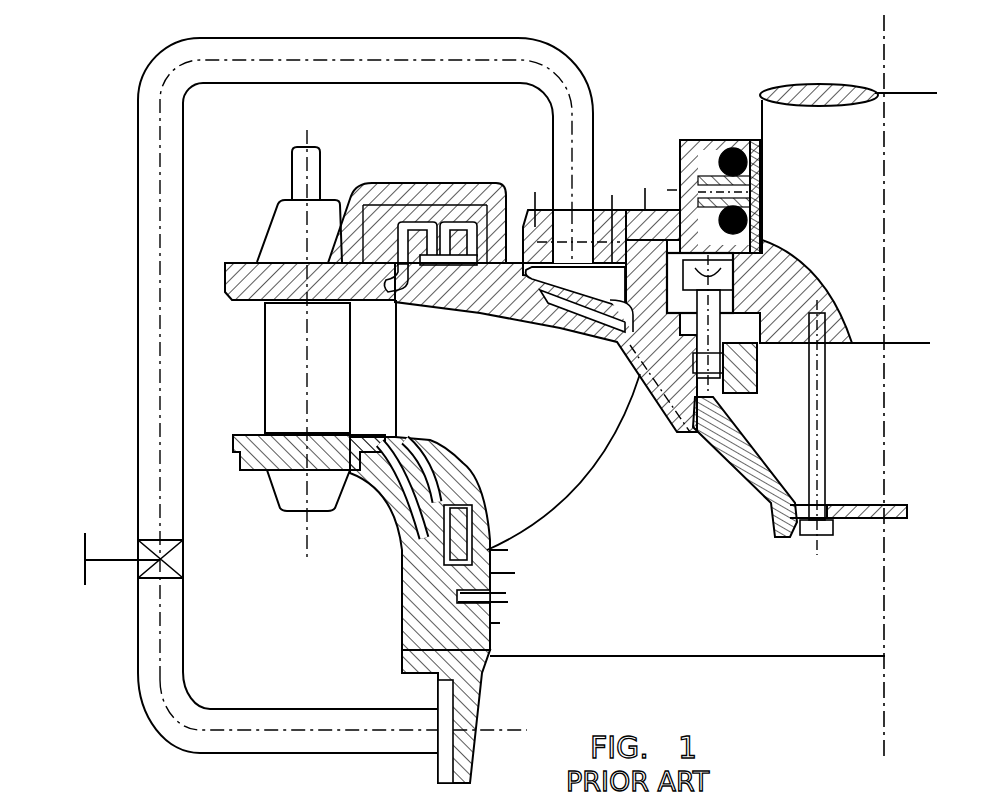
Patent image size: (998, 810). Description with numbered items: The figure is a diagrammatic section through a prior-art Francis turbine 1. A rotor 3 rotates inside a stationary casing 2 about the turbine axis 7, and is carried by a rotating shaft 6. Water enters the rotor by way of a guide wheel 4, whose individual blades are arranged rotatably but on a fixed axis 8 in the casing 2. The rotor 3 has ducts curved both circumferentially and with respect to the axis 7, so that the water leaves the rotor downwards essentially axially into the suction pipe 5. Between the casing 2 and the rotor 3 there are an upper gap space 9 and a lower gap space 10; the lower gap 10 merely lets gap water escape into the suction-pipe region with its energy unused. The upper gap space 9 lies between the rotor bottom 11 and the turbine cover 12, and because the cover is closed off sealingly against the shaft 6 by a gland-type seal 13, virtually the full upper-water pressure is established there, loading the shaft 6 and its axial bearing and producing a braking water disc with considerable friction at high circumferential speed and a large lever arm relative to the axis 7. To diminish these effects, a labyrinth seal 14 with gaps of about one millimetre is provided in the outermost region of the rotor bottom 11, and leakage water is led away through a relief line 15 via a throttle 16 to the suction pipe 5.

The Francis turbine 1 is at (689, 126).
The casing 2 is at (352, 198).
The rotor 3 is at (655, 540).
The guide wheel 4 is at (340, 355).
The suction pipe 5 is at (672, 702).
The shaft 6 is at (840, 199).
The turbine axis 7 is at (888, 192).
The fixed axis 8 is at (301, 524).
The upper gap space 9 is at (400, 294).
The lower gap space 10 is at (445, 487).
The rotor bottom 11 is at (528, 325).
The turbine cover 12 is at (535, 240).
The gland-type seal 13 is at (763, 153).
The labyrinth seal 14 is at (406, 222).
The relief line 15 is at (563, 57).
The throttle 16 is at (160, 578).